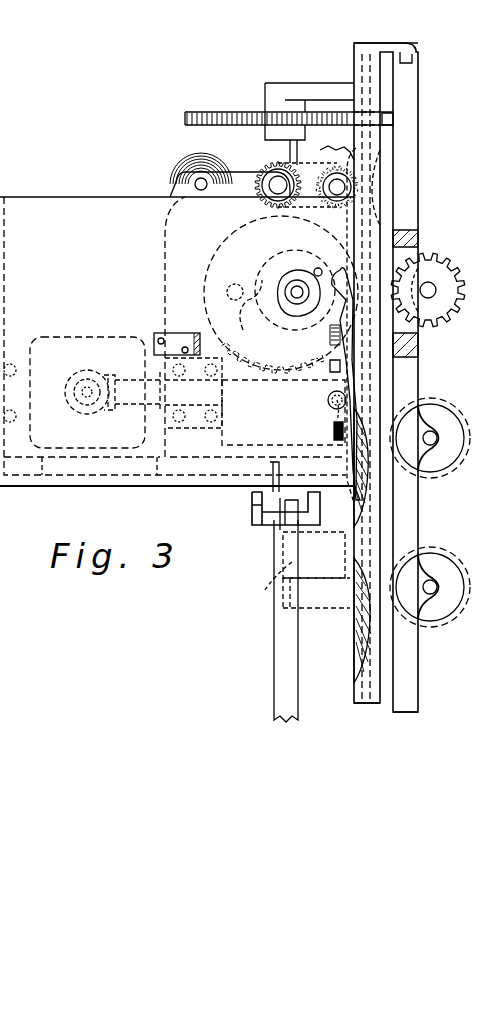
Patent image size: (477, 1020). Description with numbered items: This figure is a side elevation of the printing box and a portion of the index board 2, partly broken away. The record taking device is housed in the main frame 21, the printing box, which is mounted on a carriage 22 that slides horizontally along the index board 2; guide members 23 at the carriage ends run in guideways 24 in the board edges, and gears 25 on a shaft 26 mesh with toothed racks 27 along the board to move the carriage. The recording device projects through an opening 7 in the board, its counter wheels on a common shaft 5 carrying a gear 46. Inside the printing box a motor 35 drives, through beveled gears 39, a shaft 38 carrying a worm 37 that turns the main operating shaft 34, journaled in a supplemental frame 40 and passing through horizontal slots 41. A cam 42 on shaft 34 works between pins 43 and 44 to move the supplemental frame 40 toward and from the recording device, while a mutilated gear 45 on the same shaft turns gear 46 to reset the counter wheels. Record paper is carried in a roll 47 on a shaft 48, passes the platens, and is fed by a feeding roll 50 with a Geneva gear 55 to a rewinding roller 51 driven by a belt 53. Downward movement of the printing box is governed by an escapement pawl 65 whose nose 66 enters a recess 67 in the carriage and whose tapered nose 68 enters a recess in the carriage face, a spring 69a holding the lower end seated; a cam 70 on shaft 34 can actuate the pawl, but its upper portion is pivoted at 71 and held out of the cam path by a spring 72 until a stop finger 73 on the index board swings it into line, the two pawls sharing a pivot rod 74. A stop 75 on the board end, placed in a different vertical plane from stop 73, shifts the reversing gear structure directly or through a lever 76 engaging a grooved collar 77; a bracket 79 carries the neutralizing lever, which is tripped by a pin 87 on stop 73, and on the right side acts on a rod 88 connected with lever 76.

The index board 2 is at (405, 394).
The common shaft 5 is at (429, 284).
The opening 7 is at (405, 281).
The main frame 21 is at (80, 198).
The carriage 22 is at (354, 62).
The guide members 23 is at (383, 43).
The guideways 24 is at (418, 62).
The gears 25 is at (208, 112).
The shaft 26 is at (272, 146).
The toothed racks 27 is at (393, 117).
The operating shaft 34 is at (295, 297).
The motor 35 is at (52, 338).
The worm 37 is at (270, 445).
The shaft 38 is at (130, 416).
The beveled gears 39 is at (88, 372).
The supplemental frame 40 is at (165, 258).
The horizontal slots 41 is at (247, 312).
The cam 42 is at (255, 268).
The pin 43 is at (229, 306).
The pin 44 is at (363, 324).
The mutilated gear 45 is at (256, 398).
The gear 46 is at (432, 328).
The roll 47 is at (172, 171).
The shaft 48 is at (207, 184).
The feeding roll 50 is at (332, 192).
The rewinding roller 51 is at (270, 190).
The belt 53 is at (268, 166).
The Geneva gear 55 is at (384, 190).
The escapement pawl 65 is at (334, 437).
The nose 66 is at (299, 508).
The recess 67 is at (356, 482).
The tapered nose 68 is at (334, 278).
The spring 69a is at (350, 380).
The cam 70 is at (316, 268).
The pivot 71 is at (330, 375).
The spring 72 is at (338, 423).
The stop finger 73 is at (314, 555).
The pivot rod 74 is at (328, 400).
The stop 75 is at (325, 608).
The lever 76 is at (286, 520).
The grooved collar 77 is at (256, 523).
The bracket 79 is at (178, 327).
The pin 87 is at (264, 576).
The rod 88 is at (268, 464).